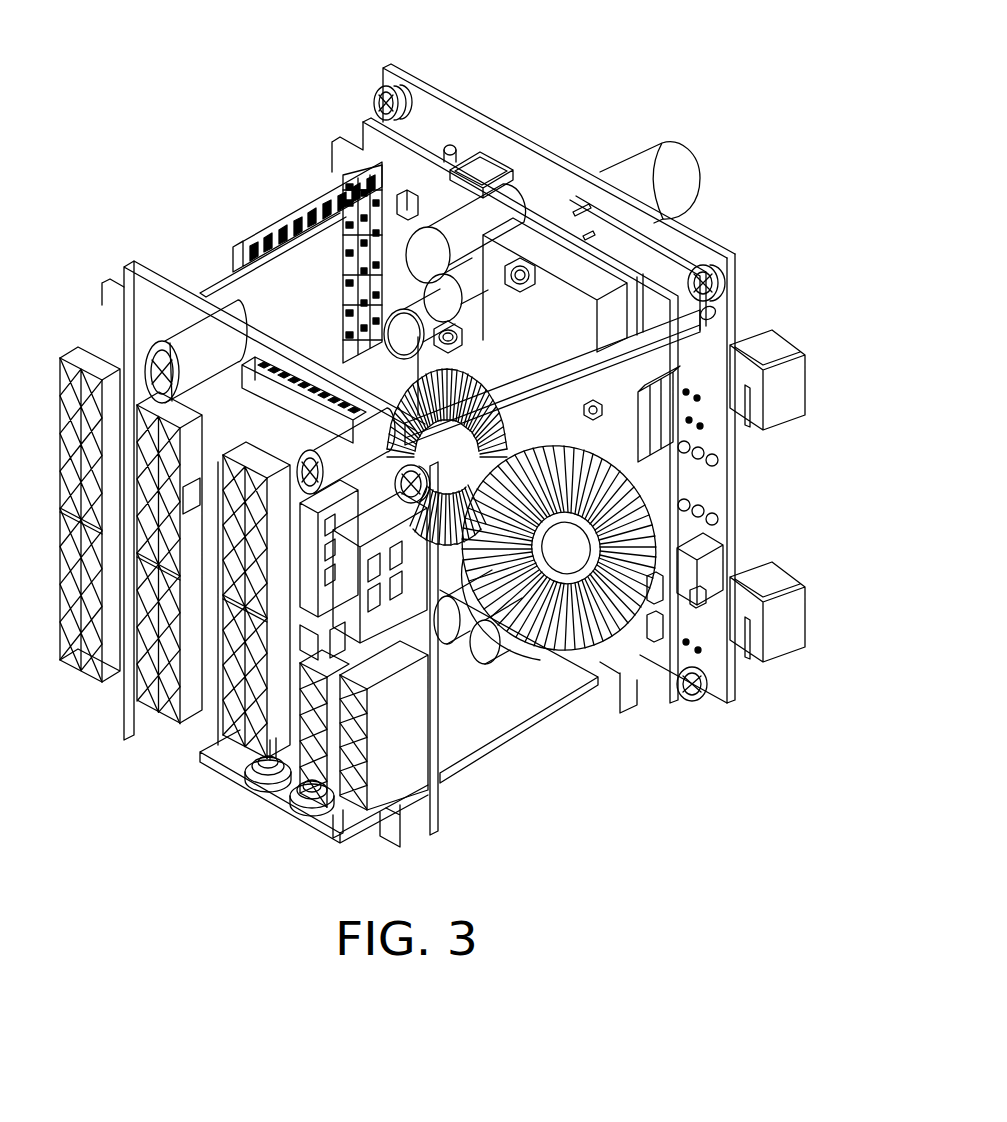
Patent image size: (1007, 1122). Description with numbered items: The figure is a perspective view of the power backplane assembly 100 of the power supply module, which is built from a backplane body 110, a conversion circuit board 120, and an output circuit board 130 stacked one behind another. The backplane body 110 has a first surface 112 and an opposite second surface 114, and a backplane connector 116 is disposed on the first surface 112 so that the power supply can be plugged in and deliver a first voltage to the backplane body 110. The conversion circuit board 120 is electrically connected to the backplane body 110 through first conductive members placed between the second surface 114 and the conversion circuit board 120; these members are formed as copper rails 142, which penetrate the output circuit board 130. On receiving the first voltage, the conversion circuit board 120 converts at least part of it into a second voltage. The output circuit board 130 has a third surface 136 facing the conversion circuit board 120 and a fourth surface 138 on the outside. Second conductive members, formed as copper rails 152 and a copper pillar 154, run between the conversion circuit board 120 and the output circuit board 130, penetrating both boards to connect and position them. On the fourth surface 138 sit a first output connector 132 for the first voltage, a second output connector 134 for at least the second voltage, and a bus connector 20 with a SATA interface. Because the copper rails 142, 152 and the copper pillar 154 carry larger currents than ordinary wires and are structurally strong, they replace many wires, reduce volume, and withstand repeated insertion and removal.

The power backplane assembly 100 is at (121, 112).
The backplane body 110 is at (537, 177).
The first surface 112 is at (735, 520).
The second surface 114 is at (652, 250).
The backplane connector 116 is at (783, 400).
The conversion circuit board 120 is at (380, 148).
The output circuit board 130 is at (100, 300).
The first output connector 132 is at (120, 668).
The second output connector 134 is at (232, 788).
The third surface 136 is at (440, 808).
The fourth surface 138 is at (414, 803).
The copper rails 142 is at (698, 590).
The copper rails 152 is at (227, 297).
The copper pillar 154 is at (655, 350).
The bus connector 20 is at (297, 383).